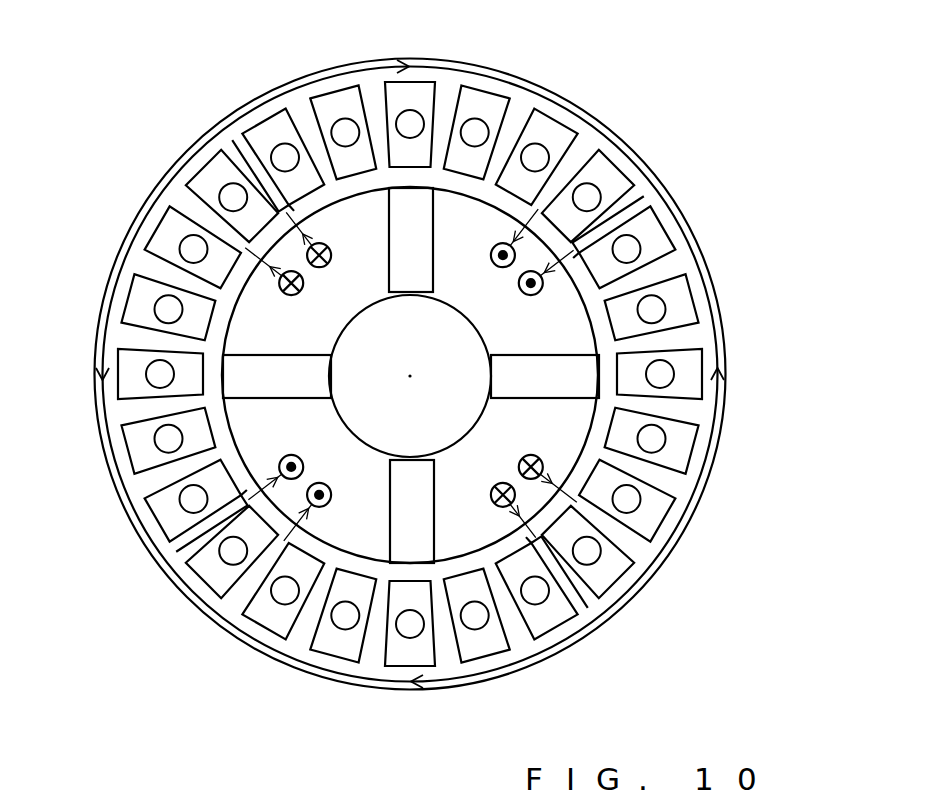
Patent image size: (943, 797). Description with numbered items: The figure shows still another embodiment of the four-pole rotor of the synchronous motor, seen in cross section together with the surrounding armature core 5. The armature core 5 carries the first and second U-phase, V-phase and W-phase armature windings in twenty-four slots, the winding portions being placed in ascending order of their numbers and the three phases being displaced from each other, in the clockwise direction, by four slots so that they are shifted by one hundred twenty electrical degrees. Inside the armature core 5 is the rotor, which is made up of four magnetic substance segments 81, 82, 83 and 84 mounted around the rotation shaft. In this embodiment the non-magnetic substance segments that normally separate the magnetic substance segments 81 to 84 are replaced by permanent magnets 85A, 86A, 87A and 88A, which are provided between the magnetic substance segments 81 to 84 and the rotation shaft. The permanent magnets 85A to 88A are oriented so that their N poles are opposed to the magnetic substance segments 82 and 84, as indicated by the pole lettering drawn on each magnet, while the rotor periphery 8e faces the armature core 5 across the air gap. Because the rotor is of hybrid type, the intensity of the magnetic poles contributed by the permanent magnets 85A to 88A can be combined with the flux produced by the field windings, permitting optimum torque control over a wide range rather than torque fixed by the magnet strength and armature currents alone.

The armature core 5 is at (618, 150).
The rotor core outer periphery 8e is at (604, 348).
The magnetic substance segment 81 is at (535, 313).
The magnetic substance segment 82 is at (558, 437).
The magnetic substance segment 83 is at (263, 440).
The magnetic substance segment 84 is at (245, 298).
The permanent magnet 85A is at (410, 203).
The permanent magnet 86A is at (585, 381).
The permanent magnet 87A is at (412, 542).
The permanent magnet 88A is at (237, 378).